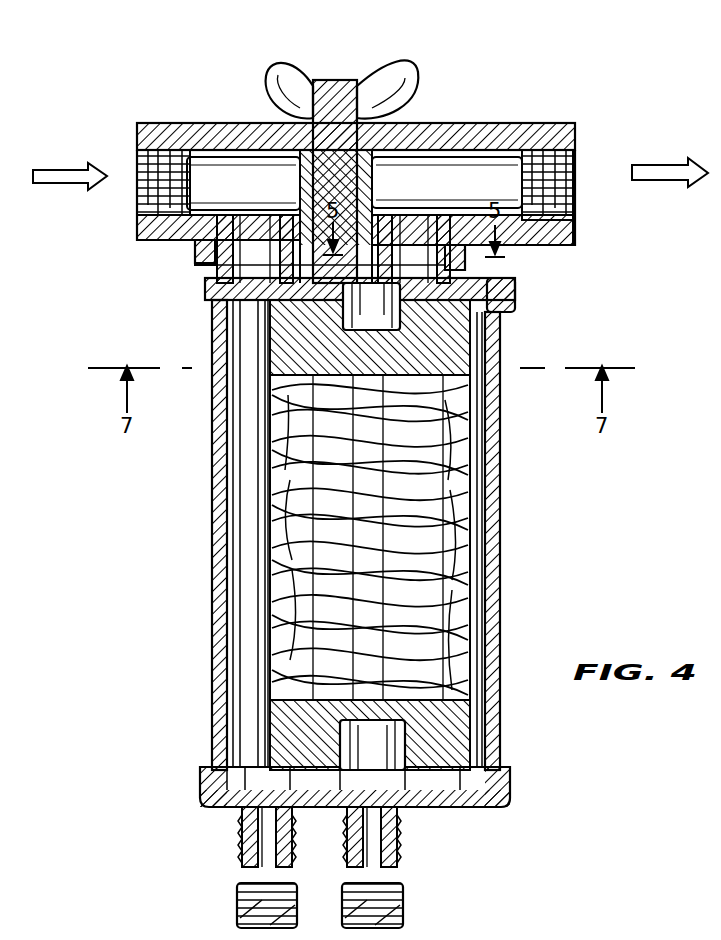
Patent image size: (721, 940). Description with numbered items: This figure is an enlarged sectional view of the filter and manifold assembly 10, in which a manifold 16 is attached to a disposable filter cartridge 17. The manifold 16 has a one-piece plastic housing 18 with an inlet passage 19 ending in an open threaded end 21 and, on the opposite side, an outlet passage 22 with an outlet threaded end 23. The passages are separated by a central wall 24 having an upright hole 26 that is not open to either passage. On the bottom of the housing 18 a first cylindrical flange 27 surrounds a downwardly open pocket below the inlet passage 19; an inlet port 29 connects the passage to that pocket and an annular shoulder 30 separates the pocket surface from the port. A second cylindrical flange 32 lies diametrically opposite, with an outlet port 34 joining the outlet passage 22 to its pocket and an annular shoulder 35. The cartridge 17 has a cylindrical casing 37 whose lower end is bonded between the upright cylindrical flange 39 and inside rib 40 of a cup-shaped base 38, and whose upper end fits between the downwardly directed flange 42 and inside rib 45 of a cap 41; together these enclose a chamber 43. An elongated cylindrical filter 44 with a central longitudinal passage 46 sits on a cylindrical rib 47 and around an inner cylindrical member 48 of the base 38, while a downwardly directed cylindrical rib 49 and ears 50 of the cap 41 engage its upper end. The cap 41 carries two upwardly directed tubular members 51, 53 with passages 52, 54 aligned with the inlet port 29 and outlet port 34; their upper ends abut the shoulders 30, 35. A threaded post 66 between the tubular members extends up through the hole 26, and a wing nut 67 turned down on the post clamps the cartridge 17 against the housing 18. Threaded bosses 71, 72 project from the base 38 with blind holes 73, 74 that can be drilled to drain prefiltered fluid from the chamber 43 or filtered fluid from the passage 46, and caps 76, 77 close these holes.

The filter and manifold assembly 10 is at (545, 76).
The manifold 16 is at (207, 122).
The filter cartridge 17 is at (205, 580).
The housing 18 is at (462, 132).
The inlet passage 19 is at (243, 183).
The threaded end 21 is at (140, 195).
The outlet passage 22 is at (447, 182).
The outlet threaded end 23 is at (560, 218).
The central wall 24 is at (262, 148).
The upright hole 26 is at (410, 132).
The first cylindrical flange 27 is at (200, 255).
The inlet port 29 is at (190, 238).
The annular shoulder 30 is at (270, 190).
The second cylindrical flange 32 is at (470, 262).
The outlet port 34 is at (415, 225).
The annular shoulder 35 is at (378, 235).
The casing 37 is at (492, 596).
The base 38 is at (230, 792).
The upright cylindrical flange 39 is at (520, 777).
The inside rib 40 is at (215, 745).
The cap 41 is at (520, 277).
The downwardly directed flange 42 is at (510, 306).
The chamber 43 is at (240, 462).
The filter 44 is at (300, 674).
The inside rib 45 is at (212, 328).
The central longitudinal passage 46 is at (355, 392).
The cylindrical rib 47 is at (448, 782).
The inner cylindrical member 48 is at (418, 797).
The cylindrical rib 49 is at (370, 535).
The ears 50 is at (404, 332).
The tubular member 51 is at (285, 262).
The passage 52 is at (244, 320).
The tubular member 53 is at (455, 198).
The passage 54 is at (436, 262).
The post 66 is at (335, 84).
The wing nut 67 is at (395, 76).
The threaded boss 71 is at (244, 845).
The threaded boss 72 is at (395, 846).
The blind hole 73 is at (265, 868).
The blind hole 74 is at (385, 870).
The cap 76 is at (240, 908).
The cap 77 is at (398, 908).